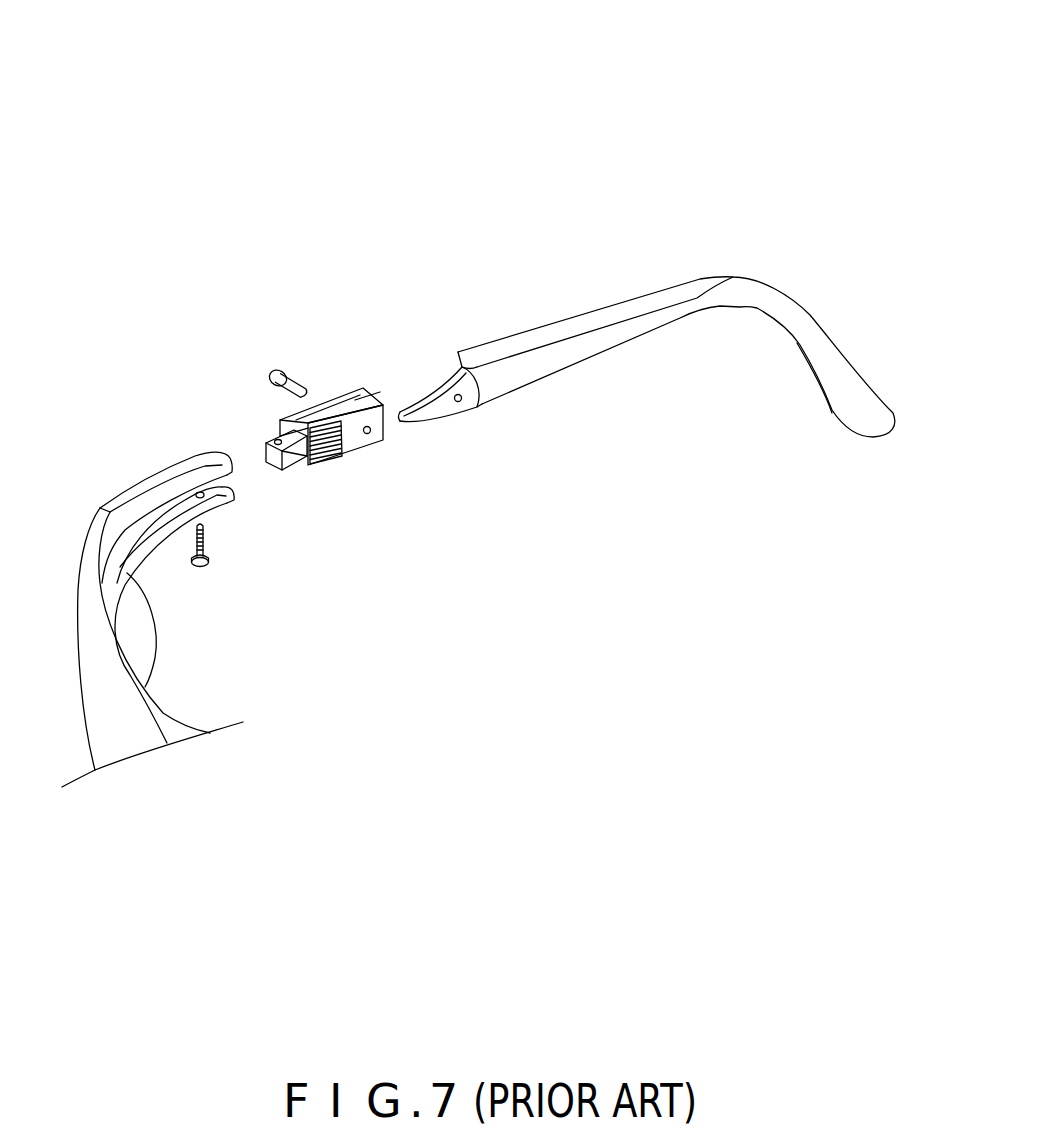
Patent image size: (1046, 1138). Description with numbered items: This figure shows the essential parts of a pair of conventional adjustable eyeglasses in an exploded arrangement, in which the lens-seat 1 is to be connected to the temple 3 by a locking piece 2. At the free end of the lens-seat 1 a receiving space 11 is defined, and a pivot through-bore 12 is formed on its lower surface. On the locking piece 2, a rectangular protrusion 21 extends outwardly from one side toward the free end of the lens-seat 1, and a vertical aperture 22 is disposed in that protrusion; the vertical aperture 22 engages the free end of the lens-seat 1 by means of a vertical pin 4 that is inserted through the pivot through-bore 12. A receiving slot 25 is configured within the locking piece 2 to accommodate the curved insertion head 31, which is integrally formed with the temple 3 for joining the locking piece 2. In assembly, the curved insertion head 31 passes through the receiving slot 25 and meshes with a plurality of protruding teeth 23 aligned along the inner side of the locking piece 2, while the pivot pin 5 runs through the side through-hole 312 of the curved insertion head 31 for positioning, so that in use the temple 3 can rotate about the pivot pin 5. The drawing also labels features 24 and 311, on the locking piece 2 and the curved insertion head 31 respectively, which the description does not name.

The lens-seat 1 is at (203, 562).
The receiving space 11 is at (220, 488).
The pivot through-bore 12 is at (203, 499).
The vertical pin 4 is at (204, 568).
The locking piece 2 is at (334, 366).
The rectangular protrusion 21 is at (291, 436).
The vertical aperture 22 is at (275, 440).
The protruding teeth 23 is at (328, 452).
The hole of connector 24 is at (369, 434).
The receiving slot 25 is at (385, 397).
The pivot pin 5 is at (287, 369).
The temple 3 is at (647, 299).
The curved insertion head 31 is at (497, 467).
The hole of hinge block 311 is at (404, 418).
The side through-hole 312 is at (478, 402).